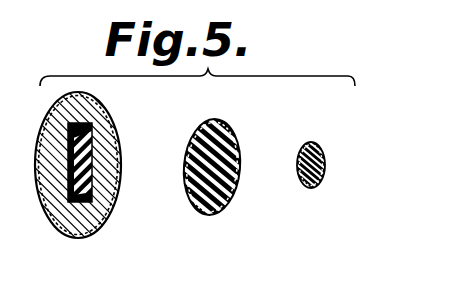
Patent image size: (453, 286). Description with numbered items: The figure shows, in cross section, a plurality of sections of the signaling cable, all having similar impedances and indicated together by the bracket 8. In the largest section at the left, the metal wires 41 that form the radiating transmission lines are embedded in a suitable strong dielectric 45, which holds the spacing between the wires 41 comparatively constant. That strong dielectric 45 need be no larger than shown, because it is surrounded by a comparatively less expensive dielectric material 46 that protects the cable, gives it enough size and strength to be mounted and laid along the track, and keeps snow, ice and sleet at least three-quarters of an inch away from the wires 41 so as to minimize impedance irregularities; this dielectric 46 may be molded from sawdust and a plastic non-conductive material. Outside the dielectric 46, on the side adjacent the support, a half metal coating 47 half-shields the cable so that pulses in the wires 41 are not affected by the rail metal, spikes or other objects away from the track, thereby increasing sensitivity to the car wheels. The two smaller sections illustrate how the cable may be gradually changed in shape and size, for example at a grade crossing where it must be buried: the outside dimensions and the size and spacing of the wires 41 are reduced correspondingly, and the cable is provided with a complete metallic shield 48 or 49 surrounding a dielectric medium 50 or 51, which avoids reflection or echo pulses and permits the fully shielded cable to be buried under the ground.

The composite yarn assembly 8 is at (104, 96).
The metal wires 41 is at (65, 143).
The strong dielectric 45 is at (100, 197).
The dielectric material 46 is at (108, 155).
The half metal coating 47 is at (52, 113).
The complete metallic shield 48 is at (213, 127).
The complete metallic shield 49 is at (313, 160).
The dielectric medium 50 is at (231, 152).
The dielectric medium 51 is at (316, 166).